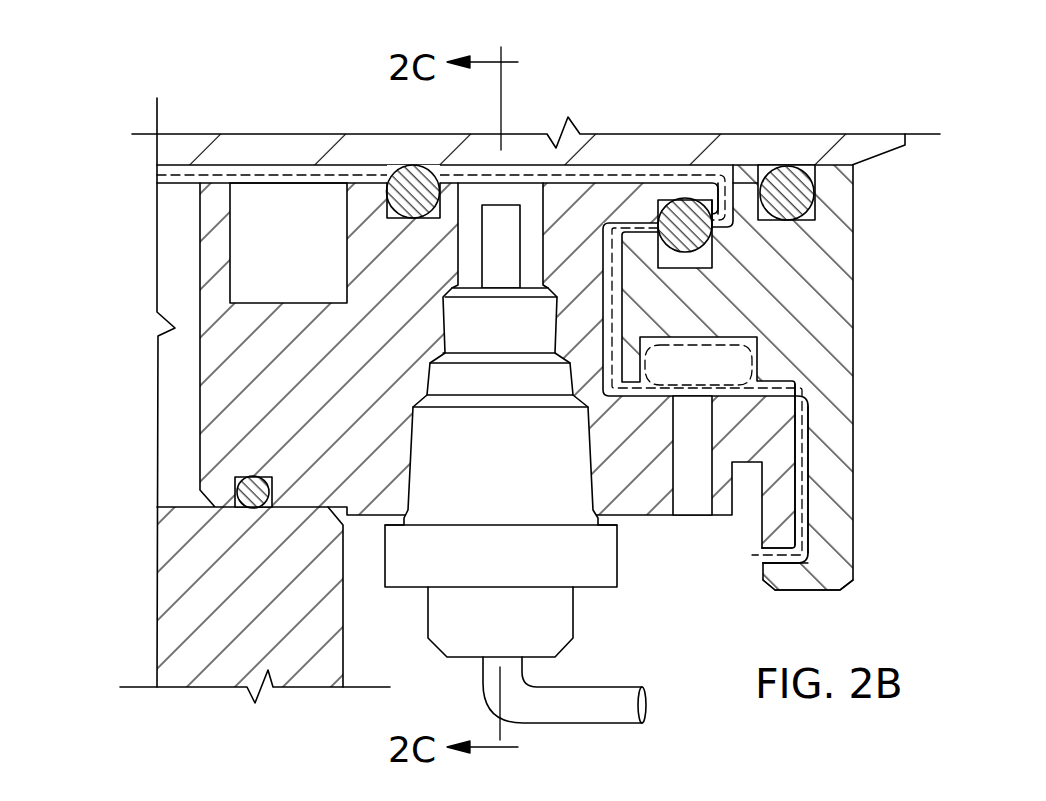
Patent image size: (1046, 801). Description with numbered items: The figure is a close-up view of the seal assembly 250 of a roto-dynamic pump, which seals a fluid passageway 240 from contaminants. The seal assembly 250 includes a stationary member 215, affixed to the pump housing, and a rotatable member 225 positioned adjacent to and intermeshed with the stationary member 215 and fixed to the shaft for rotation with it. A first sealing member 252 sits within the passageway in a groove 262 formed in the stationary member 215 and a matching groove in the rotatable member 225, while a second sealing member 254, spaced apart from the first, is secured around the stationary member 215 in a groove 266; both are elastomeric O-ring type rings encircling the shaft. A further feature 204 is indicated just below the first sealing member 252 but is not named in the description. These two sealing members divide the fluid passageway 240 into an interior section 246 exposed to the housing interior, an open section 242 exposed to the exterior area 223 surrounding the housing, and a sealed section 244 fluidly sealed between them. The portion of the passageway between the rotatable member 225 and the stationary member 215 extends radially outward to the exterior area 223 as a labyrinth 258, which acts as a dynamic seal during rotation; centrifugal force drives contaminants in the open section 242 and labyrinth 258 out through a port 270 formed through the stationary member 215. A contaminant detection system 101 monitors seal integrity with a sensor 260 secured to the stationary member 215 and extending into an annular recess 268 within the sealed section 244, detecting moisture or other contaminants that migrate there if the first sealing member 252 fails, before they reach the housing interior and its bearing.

The contaminant detection system 101 is at (508, 505).
The seal seat 204 is at (680, 264).
The stationary member 215 is at (330, 395).
The exterior area 223 is at (732, 630).
The rotatable member 225 is at (786, 305).
The fluid passageway 240 is at (755, 556).
The open section 242 is at (806, 460).
The sealed section 244 is at (627, 180).
The interior section 246 is at (262, 183).
The seal assembly 250 is at (188, 103).
The first sealing member 252 is at (713, 208).
The second sealing member 254 is at (415, 187).
The labyrinth 258 is at (725, 360).
The sensor 260 is at (558, 560).
The groove 262 is at (668, 200).
The groove 266 is at (442, 218).
The annular recess 268 is at (543, 205).
The port 270 is at (677, 490).